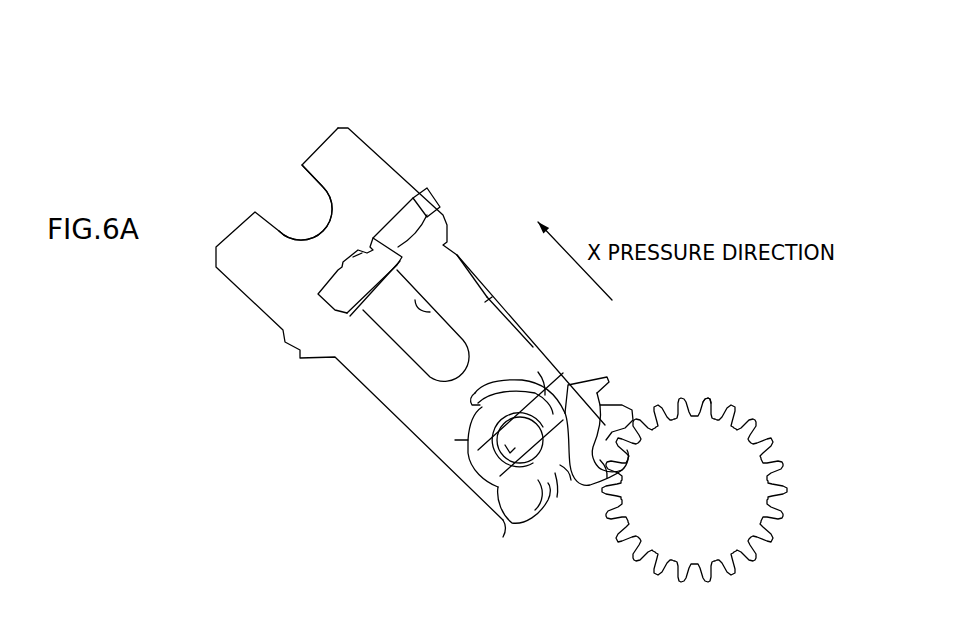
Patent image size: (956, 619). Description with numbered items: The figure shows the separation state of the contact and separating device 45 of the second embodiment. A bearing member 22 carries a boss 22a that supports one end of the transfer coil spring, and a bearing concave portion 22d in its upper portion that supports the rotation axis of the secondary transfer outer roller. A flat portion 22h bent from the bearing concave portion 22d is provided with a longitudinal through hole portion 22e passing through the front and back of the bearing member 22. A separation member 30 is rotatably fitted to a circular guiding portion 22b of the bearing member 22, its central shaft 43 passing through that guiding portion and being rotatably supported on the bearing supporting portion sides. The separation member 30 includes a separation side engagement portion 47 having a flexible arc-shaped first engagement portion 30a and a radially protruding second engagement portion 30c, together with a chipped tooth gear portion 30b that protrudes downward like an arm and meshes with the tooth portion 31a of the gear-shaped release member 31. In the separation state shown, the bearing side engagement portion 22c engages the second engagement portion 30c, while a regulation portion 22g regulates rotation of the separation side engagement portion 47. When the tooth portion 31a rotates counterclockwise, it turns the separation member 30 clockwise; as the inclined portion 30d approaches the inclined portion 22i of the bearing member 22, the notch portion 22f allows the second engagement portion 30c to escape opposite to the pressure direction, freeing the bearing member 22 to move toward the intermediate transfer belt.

The bearing member 22 is at (412, 122).
The contact and separating device 45 is at (508, 83).
The boss 22a is at (427, 188).
The circular guiding portion 22b is at (468, 442).
The bearing side engagement portion 22c is at (505, 523).
The bearing concave portion 22d is at (272, 226).
The longitudinal through hole portion 22e is at (438, 305).
The notch portion 22f is at (568, 477).
The regulation portion 22g is at (543, 507).
The flat portion 22h is at (492, 298).
The inclined portion 22i is at (607, 470).
The separation member 30 is at (549, 462).
The first engagement portion 30a is at (483, 387).
The chipped tooth gear portion 30b is at (623, 405).
The second engagement portion 30c is at (497, 480).
The inclined portion 30d is at (573, 397).
The release member 31 is at (705, 451).
The tooth portion 31a is at (707, 400).
The shaft 43 is at (513, 445).
The separation side engagement portion 47 is at (538, 372).